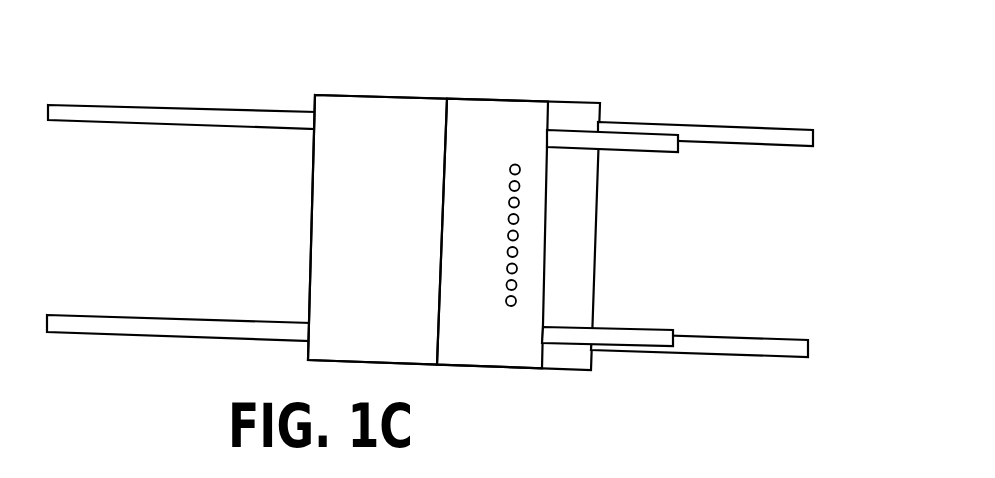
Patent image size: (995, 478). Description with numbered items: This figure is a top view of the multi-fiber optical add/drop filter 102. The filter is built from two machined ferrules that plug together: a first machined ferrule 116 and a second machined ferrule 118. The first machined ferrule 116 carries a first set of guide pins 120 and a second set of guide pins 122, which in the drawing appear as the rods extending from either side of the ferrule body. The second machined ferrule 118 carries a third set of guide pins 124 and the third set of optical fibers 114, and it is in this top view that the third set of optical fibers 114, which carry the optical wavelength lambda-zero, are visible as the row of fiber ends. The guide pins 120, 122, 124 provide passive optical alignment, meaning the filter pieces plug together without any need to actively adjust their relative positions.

The multi-fiber optical add/drop filter 102 is at (249, 57).
The third set of optical fibers 114 is at (519, 187).
The first machined ferrule 116 is at (313, 253).
The second machined ferrule 118 is at (510, 100).
The first set of guide pins 120 is at (747, 127).
The second set of guide pins 122 is at (218, 128).
The third set of guide pins 124 is at (641, 151).